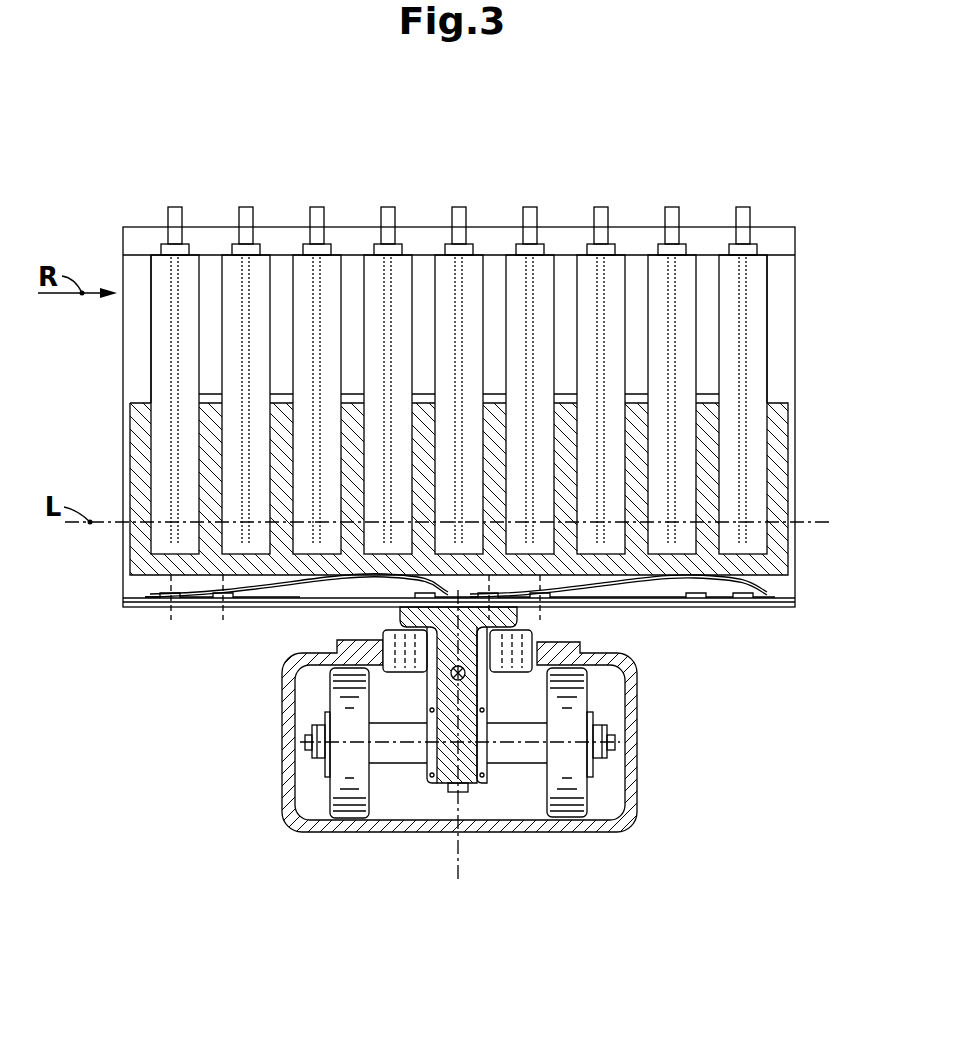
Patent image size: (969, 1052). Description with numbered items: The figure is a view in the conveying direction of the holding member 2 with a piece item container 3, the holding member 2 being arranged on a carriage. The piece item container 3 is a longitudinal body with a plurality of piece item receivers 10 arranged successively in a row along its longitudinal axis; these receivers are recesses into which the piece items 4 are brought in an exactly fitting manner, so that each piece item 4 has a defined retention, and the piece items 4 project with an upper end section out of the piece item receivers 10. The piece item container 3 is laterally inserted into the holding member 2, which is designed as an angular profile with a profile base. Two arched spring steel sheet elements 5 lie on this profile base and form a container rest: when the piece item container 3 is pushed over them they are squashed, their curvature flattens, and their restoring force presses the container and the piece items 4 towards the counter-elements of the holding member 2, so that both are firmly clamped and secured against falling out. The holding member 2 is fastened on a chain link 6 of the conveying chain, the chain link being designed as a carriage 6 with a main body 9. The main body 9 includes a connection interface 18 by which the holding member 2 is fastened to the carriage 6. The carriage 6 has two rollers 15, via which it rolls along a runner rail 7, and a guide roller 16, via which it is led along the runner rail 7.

The holding member 2 is at (745, 603).
The piece item container 3 is at (143, 434).
The piece items 4 is at (234, 268).
The spring steel sheet elements 5 is at (308, 590).
The chain link 6 is at (412, 777).
The runner rail 7 is at (630, 800).
The main body 9 is at (484, 682).
The piece item receivers 10 is at (152, 494).
The rollers 15 is at (347, 803).
The guide roller 16 is at (540, 632).
The connection interface 18 is at (450, 770).